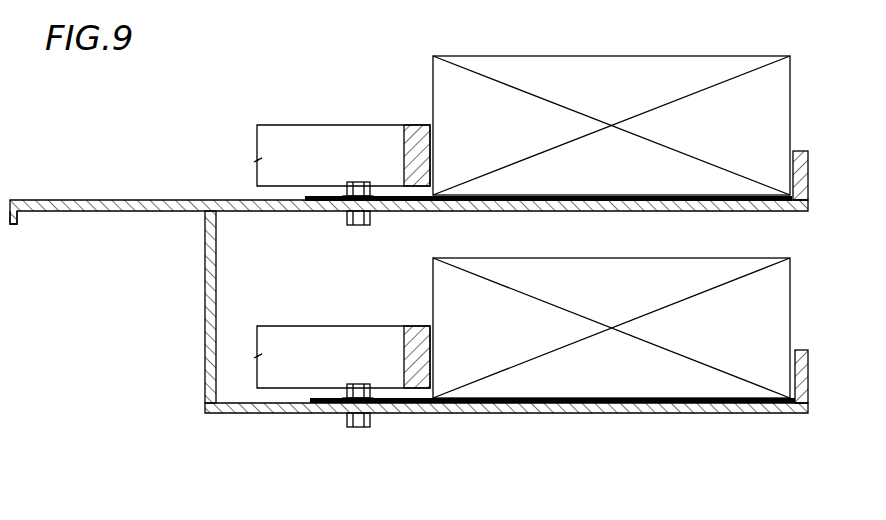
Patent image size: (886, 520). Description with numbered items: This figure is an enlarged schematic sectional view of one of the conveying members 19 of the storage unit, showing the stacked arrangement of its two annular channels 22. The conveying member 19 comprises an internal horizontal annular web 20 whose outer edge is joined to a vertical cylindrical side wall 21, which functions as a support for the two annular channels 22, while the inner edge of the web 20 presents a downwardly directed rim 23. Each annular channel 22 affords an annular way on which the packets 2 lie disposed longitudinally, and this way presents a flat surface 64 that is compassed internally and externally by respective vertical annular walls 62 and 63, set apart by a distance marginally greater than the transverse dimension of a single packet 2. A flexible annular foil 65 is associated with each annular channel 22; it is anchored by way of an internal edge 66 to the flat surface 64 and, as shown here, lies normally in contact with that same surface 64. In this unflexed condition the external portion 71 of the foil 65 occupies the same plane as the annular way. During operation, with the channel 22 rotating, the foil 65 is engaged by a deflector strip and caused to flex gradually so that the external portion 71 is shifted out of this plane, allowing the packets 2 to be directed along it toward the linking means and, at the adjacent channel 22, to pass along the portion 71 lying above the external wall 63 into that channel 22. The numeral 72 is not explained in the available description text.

The packet 2 is at (724, 53).
The conveying member 19 is at (237, 416).
The internal horizontal annular web 20 is at (64, 198).
The vertical cylindrical side wall 21 is at (204, 323).
The annular channel 22 is at (809, 193).
The downwardly directed rim 23 is at (15, 225).
The internal vertical annular wall 62 is at (378, 123).
The external vertical annular wall 63 is at (803, 151).
The flat surface 64 is at (277, 197).
The flexible annular foil 65 is at (422, 195).
The internal edge 66 is at (320, 199).
The external portion 71 is at (664, 194).
The adhesive layer 72 is at (446, 410).